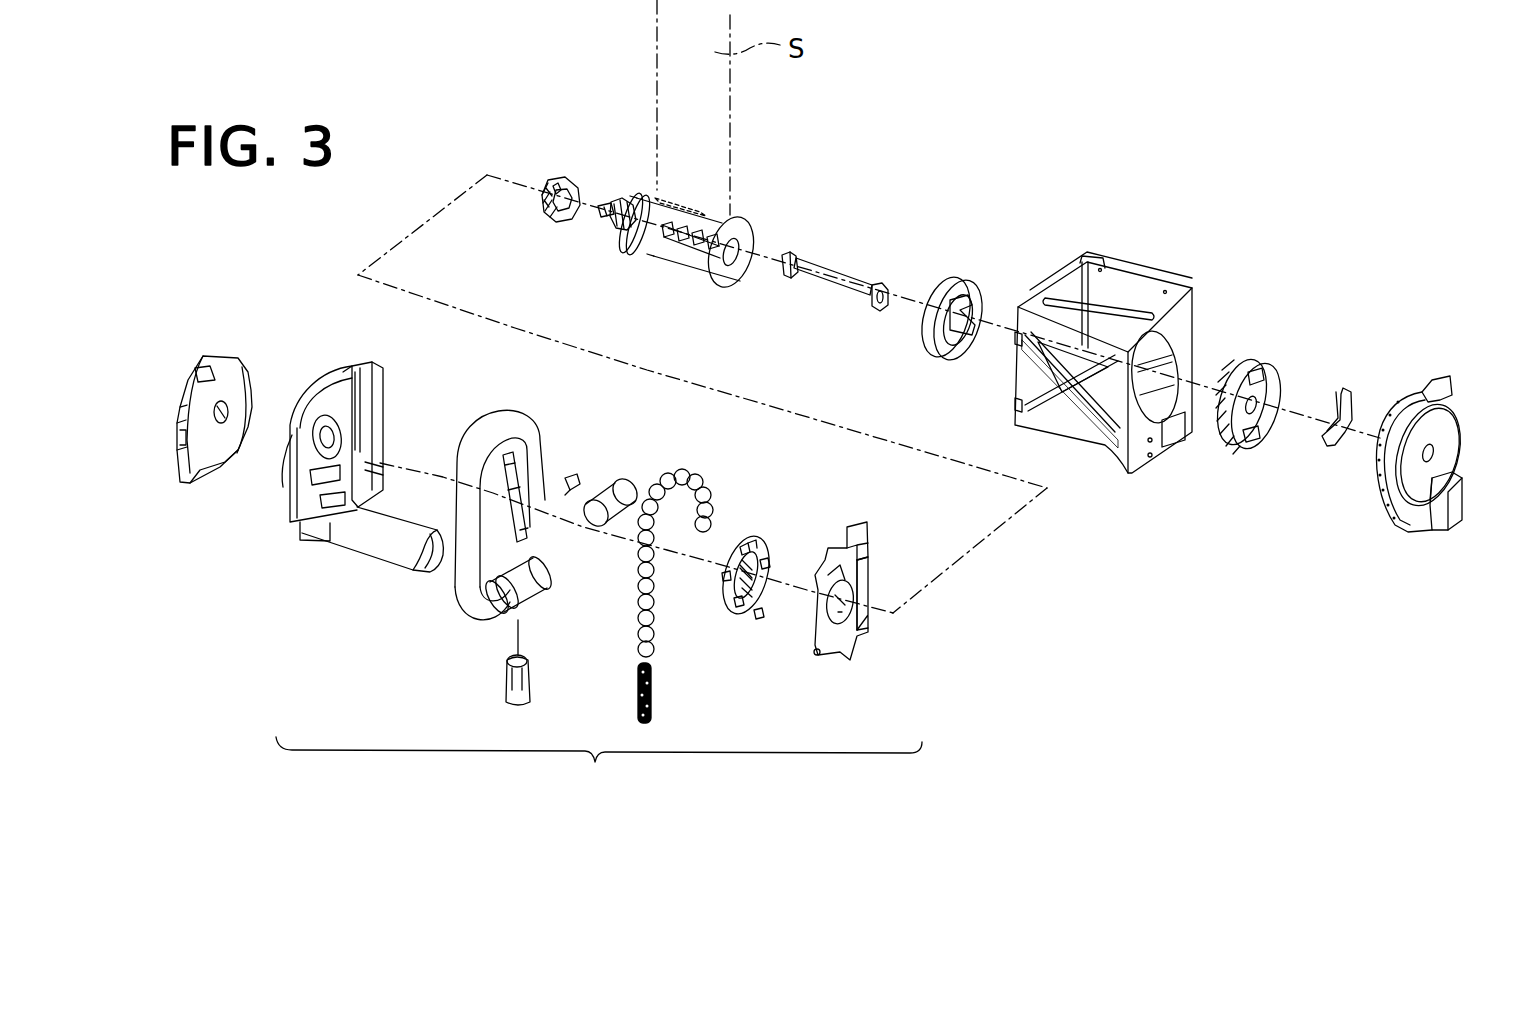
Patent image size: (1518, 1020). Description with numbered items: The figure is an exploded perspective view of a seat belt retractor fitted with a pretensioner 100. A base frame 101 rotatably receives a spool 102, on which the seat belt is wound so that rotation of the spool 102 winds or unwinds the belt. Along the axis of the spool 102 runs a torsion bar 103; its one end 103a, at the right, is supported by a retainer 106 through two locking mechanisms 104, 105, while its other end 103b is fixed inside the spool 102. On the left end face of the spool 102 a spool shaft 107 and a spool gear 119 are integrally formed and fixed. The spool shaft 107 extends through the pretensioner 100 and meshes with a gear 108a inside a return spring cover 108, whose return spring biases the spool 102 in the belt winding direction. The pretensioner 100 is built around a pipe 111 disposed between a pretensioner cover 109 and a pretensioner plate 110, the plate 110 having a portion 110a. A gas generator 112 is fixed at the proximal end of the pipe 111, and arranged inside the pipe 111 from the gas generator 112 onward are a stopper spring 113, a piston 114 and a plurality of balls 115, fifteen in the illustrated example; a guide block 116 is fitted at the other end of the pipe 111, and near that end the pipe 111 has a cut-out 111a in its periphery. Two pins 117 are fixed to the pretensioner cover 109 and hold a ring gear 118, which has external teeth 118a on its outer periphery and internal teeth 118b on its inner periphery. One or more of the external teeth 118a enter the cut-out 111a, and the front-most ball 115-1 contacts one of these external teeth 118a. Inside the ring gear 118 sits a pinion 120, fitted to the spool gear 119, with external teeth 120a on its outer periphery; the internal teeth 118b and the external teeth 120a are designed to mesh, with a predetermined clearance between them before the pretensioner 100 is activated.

The pretensioner 100 is at (599, 765).
The base frame 101 is at (1132, 282).
The spool 102 is at (690, 205).
The torsion bar 103 is at (847, 277).
The one end of torsion bar 103a is at (886, 286).
The other end of torsion bar 103b is at (792, 253).
The locking mechanism 104 is at (966, 280).
The locking mechanism 105 is at (1344, 388).
The retainer 106 is at (1413, 396).
The spool shaft 107 is at (605, 214).
The return spring cover 108 is at (228, 357).
The gear 108a is at (232, 404).
The pretensioner cover 109 is at (375, 368).
The pretensioner plate 110 is at (860, 525).
The rail portion 110a is at (855, 640).
The pipe 111 is at (528, 422).
The cut-out 111a is at (535, 490).
The gas generator 112 is at (615, 484).
The stopper spring 113 is at (637, 700).
The piston 114 is at (637, 650).
The balls 115 is at (637, 584).
The front-most ball 115-1 is at (718, 522).
The cylindrical member 116 is at (532, 686).
The pins 117 is at (283, 487).
The ring gear 118 is at (762, 606).
The external teeth 118a is at (753, 543).
The internal teeth 118b is at (765, 572).
The spool gear 119 is at (621, 232).
The pinion 120 is at (551, 174).
The external teeth 120a is at (559, 176).